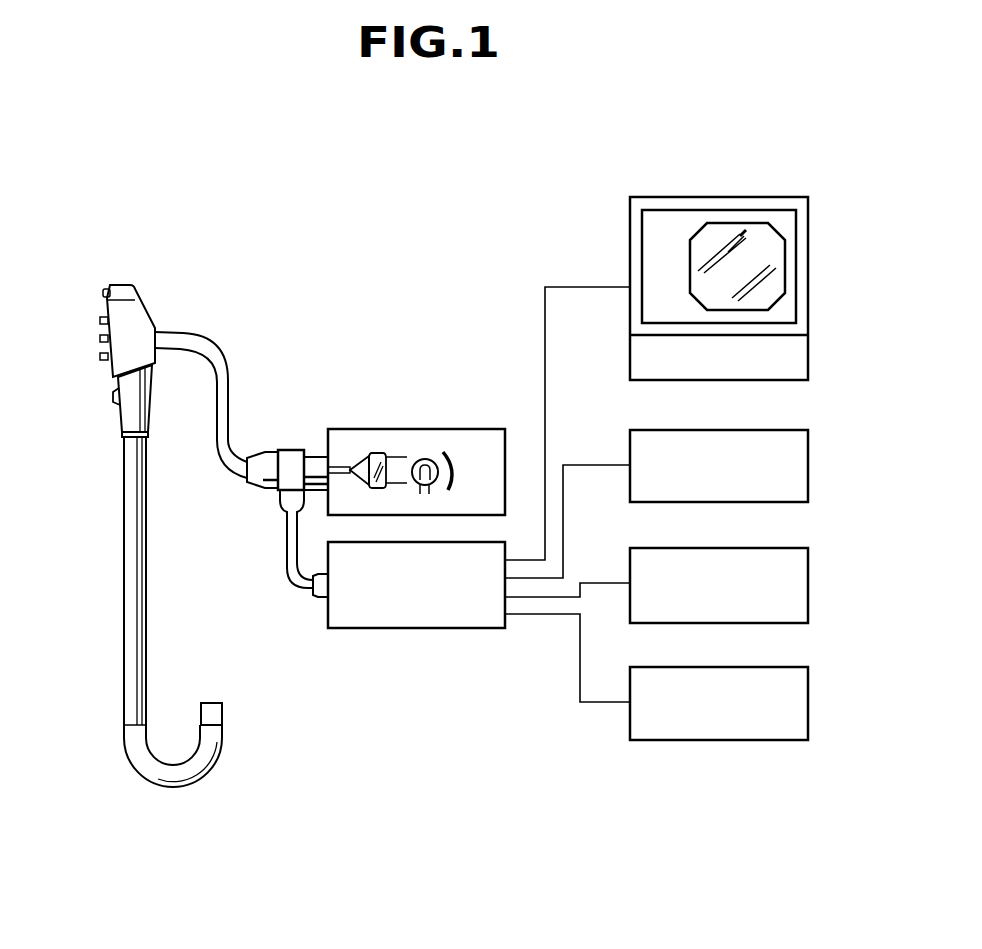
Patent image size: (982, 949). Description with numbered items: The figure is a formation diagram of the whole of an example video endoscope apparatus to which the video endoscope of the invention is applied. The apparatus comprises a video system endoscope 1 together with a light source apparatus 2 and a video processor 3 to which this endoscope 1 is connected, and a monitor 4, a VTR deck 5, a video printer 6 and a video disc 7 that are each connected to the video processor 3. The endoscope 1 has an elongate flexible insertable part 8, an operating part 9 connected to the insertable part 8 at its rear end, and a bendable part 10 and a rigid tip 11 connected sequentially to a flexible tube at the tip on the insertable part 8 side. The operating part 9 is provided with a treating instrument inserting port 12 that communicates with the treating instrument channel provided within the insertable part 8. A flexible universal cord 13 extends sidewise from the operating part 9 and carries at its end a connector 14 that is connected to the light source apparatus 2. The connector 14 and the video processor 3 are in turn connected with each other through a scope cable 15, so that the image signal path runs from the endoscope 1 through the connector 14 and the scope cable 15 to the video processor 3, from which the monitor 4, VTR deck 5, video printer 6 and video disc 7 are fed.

The video system endoscope 1 is at (104, 526).
The light source apparatus 2 is at (438, 429).
The video processor 3 is at (393, 630).
The monitor 4 is at (808, 270).
The VTR deck 5 is at (808, 466).
The video printer 6 is at (808, 586).
The video disc 7 is at (808, 706).
The insertable part 8 is at (124, 644).
The operating part 9 is at (152, 404).
The bendable part 10 is at (208, 773).
The rigid tip 11 is at (210, 703).
The treating instrument inserting port 12 is at (113, 396).
The universal cord 13 is at (230, 384).
The connector 14 is at (292, 450).
The scope cable 15 is at (287, 548).